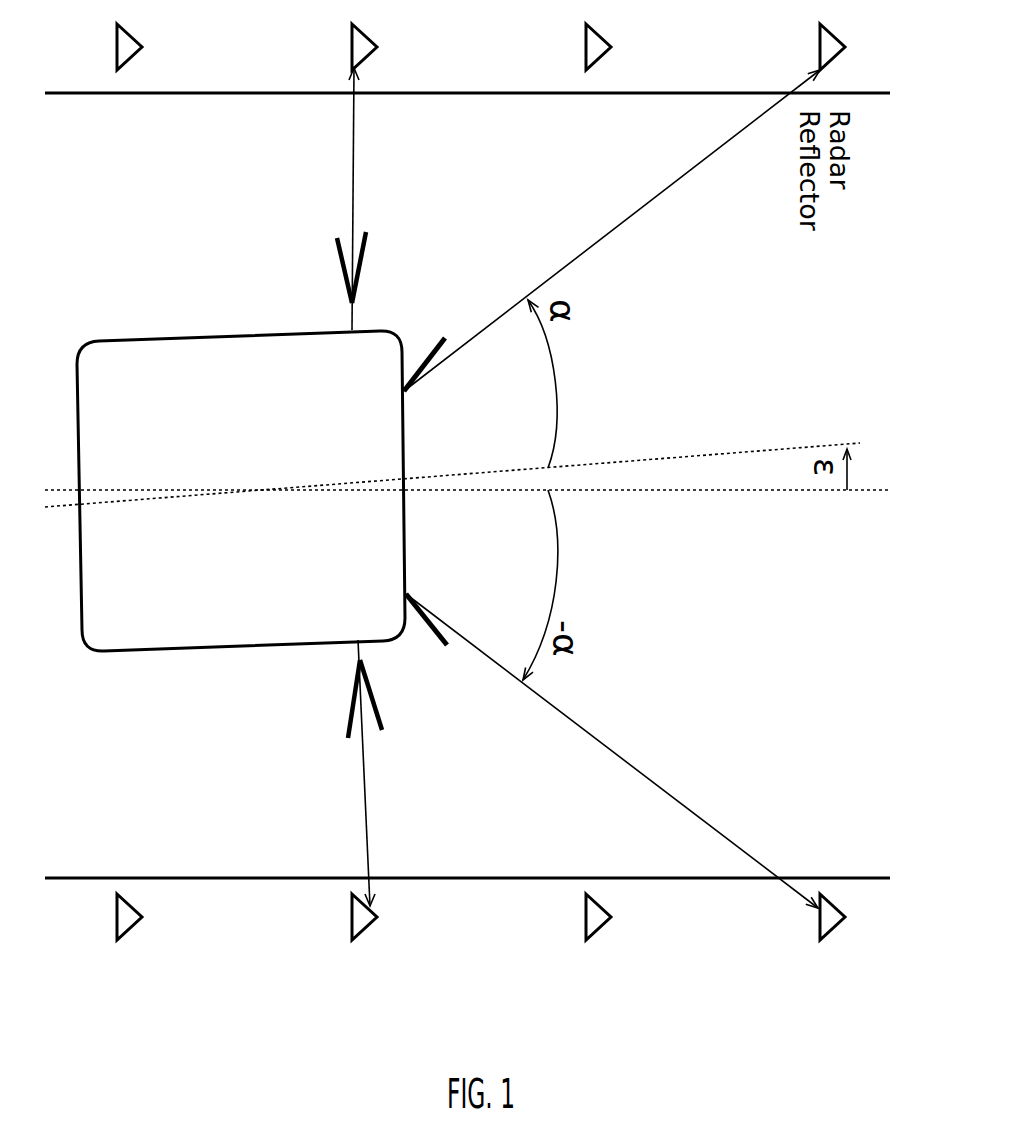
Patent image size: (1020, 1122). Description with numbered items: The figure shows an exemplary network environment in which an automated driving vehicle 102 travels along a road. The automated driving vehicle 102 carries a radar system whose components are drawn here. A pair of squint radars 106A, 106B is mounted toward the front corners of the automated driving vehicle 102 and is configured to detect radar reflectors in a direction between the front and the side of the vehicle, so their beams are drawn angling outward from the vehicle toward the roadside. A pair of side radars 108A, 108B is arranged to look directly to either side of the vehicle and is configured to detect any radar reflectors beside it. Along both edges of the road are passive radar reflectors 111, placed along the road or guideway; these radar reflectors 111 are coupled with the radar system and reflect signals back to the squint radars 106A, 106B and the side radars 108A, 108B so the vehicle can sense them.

The automated driving vehicle 102 is at (138, 338).
The squint radar 106A is at (407, 390).
The squint radar 106B is at (408, 597).
The side radar 108A is at (350, 199).
The side radar 108B is at (364, 773).
The radar reflector 111 is at (376, 40).